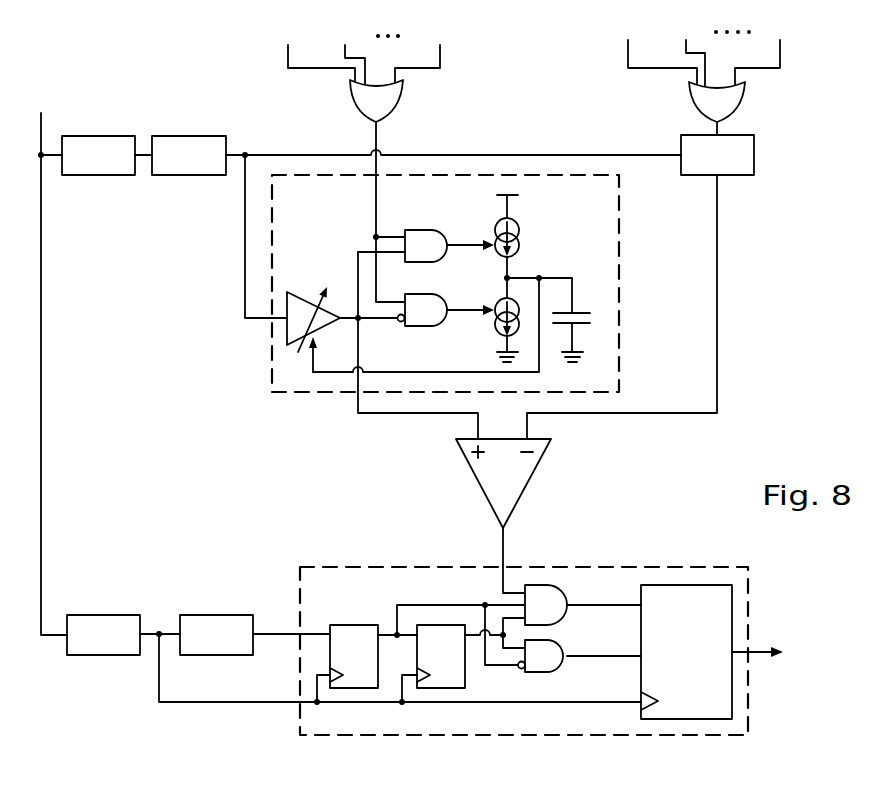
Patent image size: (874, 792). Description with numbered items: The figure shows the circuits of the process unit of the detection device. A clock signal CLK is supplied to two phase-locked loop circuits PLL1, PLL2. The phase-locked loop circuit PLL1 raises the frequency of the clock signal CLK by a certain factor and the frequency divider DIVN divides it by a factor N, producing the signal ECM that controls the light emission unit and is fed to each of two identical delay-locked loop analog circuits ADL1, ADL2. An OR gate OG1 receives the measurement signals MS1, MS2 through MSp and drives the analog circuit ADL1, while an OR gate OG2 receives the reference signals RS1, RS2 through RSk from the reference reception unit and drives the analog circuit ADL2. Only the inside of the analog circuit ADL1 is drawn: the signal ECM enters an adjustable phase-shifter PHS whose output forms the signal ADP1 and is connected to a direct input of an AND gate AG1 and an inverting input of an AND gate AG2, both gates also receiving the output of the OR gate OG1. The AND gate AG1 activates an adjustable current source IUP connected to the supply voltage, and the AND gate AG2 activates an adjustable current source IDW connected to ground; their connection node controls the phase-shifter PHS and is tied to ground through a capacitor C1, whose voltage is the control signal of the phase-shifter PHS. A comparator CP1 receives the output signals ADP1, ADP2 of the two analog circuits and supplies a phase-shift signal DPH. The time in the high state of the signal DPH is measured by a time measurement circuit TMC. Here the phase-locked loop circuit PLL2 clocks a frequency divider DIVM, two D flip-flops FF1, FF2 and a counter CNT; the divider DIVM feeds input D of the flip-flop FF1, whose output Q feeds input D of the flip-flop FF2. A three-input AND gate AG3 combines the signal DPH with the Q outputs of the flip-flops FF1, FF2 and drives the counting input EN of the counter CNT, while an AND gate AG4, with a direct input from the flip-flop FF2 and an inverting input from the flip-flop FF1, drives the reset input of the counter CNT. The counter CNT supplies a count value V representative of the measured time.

The clock signal CLK is at (42, 359).
The phase-locked loop circuit PLL1 is at (129, 168).
The frequency divider DIVN is at (220, 168).
The light emission control signal ECM is at (453, 222).
The measurement signal MS1 is at (309, 52).
The measurement signal MS2 is at (345, 52).
The measurement signal MSp is at (427, 52).
The OR gate OG1 is at (348, 100).
The reference signal RS1 is at (651, 51).
The reference signal RS2 is at (687, 51).
The reference signal RSk is at (769, 51).
The OR gate OG2 is at (690, 105).
The delay-locked loop analog circuit ADL2 is at (750, 168).
The delay-locked loop analog circuit ADL1 is at (345, 211).
The adjustable phase-shifter PHS is at (297, 287).
The AND gate AG1 is at (438, 228).
The AND gate AG2 is at (437, 293).
The adjustable current source IUP is at (520, 225).
The adjustable current source IDW is at (493, 333).
The capacitor C1 is at (583, 312).
The output signal of analog circuit ADL1 ADP1 is at (418, 349).
The output signal of analog circuit ADL2 ADP2 is at (622, 310).
The comparator CP1 is at (523, 482).
The phase-shift signal DPH is at (489, 560).
The phase-locked loop circuit PLL2 is at (135, 648).
The frequency divider DIVM is at (247, 648).
The time measurement circuit TMC is at (367, 602).
The D flip-flop FF1 is at (372, 666).
The D flip-flop FF2 is at (458, 666).
The AND gate AG3 is at (567, 597).
The AND gate AG4 is at (567, 640).
The counter CNT is at (722, 636).
The count value V is at (768, 651).